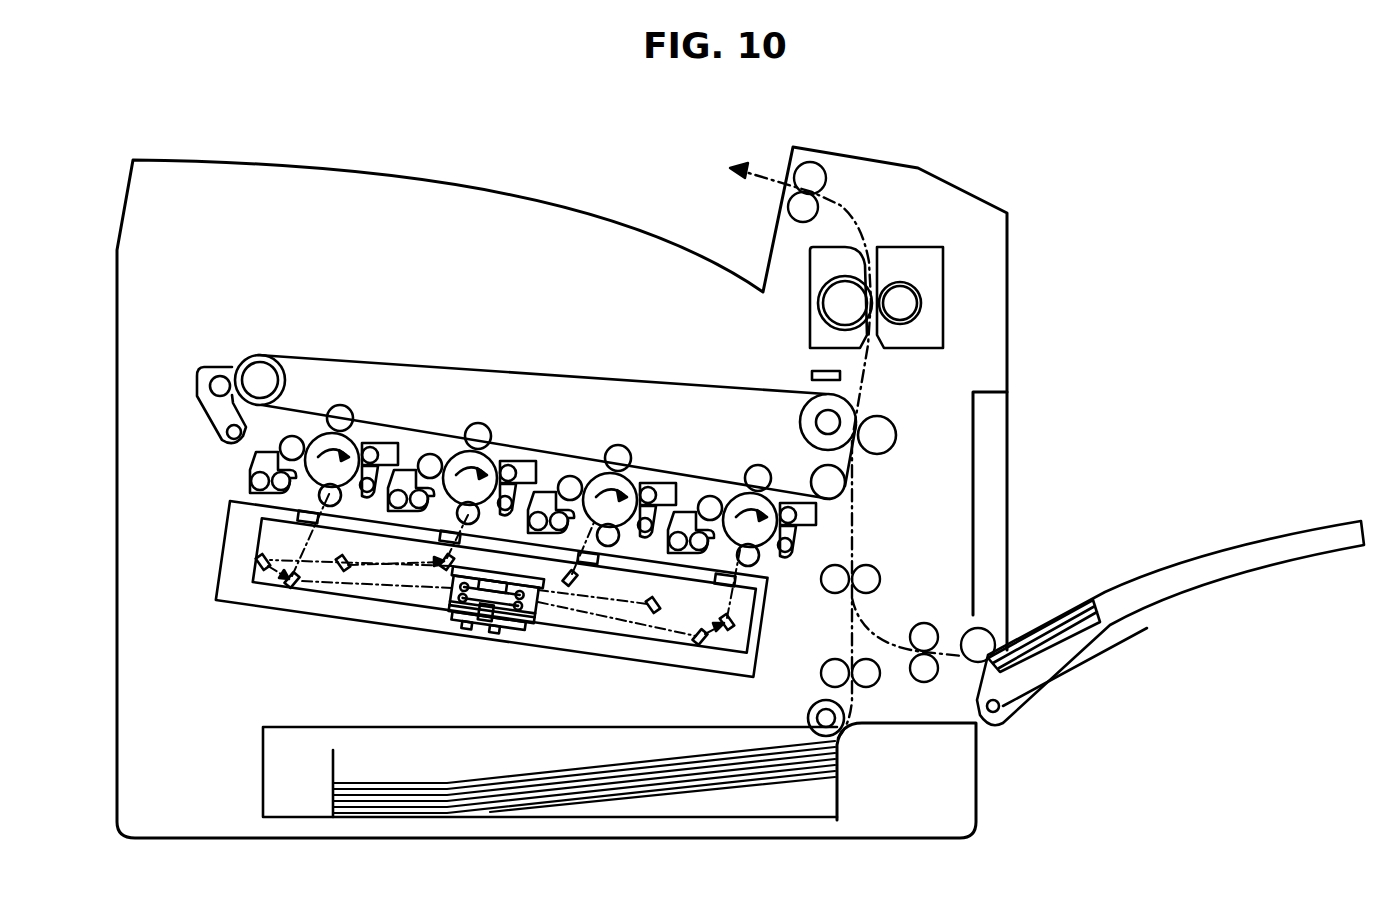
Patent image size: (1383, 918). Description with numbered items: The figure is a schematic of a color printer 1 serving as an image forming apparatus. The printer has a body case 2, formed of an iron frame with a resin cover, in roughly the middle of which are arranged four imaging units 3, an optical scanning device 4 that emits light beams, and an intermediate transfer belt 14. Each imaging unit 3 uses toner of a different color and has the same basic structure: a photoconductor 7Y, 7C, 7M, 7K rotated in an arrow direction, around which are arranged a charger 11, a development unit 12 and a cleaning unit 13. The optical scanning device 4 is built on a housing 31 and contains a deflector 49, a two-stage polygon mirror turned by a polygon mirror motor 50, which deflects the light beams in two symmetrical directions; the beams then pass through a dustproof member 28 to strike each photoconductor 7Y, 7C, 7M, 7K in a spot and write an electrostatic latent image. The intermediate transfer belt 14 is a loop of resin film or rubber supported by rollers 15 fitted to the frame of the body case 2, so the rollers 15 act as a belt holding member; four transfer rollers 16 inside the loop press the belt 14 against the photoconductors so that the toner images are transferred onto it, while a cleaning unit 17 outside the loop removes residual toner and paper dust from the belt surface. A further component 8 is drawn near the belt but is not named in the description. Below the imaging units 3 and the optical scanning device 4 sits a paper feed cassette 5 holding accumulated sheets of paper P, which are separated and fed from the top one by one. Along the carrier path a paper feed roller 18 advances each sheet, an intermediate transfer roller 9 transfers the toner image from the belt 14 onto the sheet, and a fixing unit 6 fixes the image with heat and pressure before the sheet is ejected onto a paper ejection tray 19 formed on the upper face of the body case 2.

The color printer 1 is at (1020, 143).
The body case 2 is at (116, 300).
The imaging units 3 is at (214, 495).
The optical scanning device 4 is at (486, 612).
The paper feed cassette 5 is at (262, 769).
The fixing unit 6 is at (944, 284).
The photoconductor 7Y is at (325, 433).
The photoconductor 7C is at (462, 451).
The photoconductor 7M is at (602, 473).
The photoconductor 7K is at (738, 493).
The belt unit 8 is at (489, 408).
The intermediate transfer roller 9 is at (896, 433).
The charger 11 is at (336, 506).
The development unit 12 is at (250, 463).
The cleaning unit 13 is at (378, 443).
The intermediate transfer belt 14 is at (543, 375).
The rollers 15 is at (263, 372).
The transfer rollers 16 is at (342, 406).
The cleaning unit 17 is at (214, 370).
The paper feed roller 18 is at (813, 704).
The paper ejection tray 19 is at (620, 224).
The dustproof member 28 is at (312, 525).
The housing 31 is at (460, 640).
The deflector 49 is at (520, 633).
The polygon mirror motor 50 is at (500, 641).
The sheets of paper P is at (516, 777).